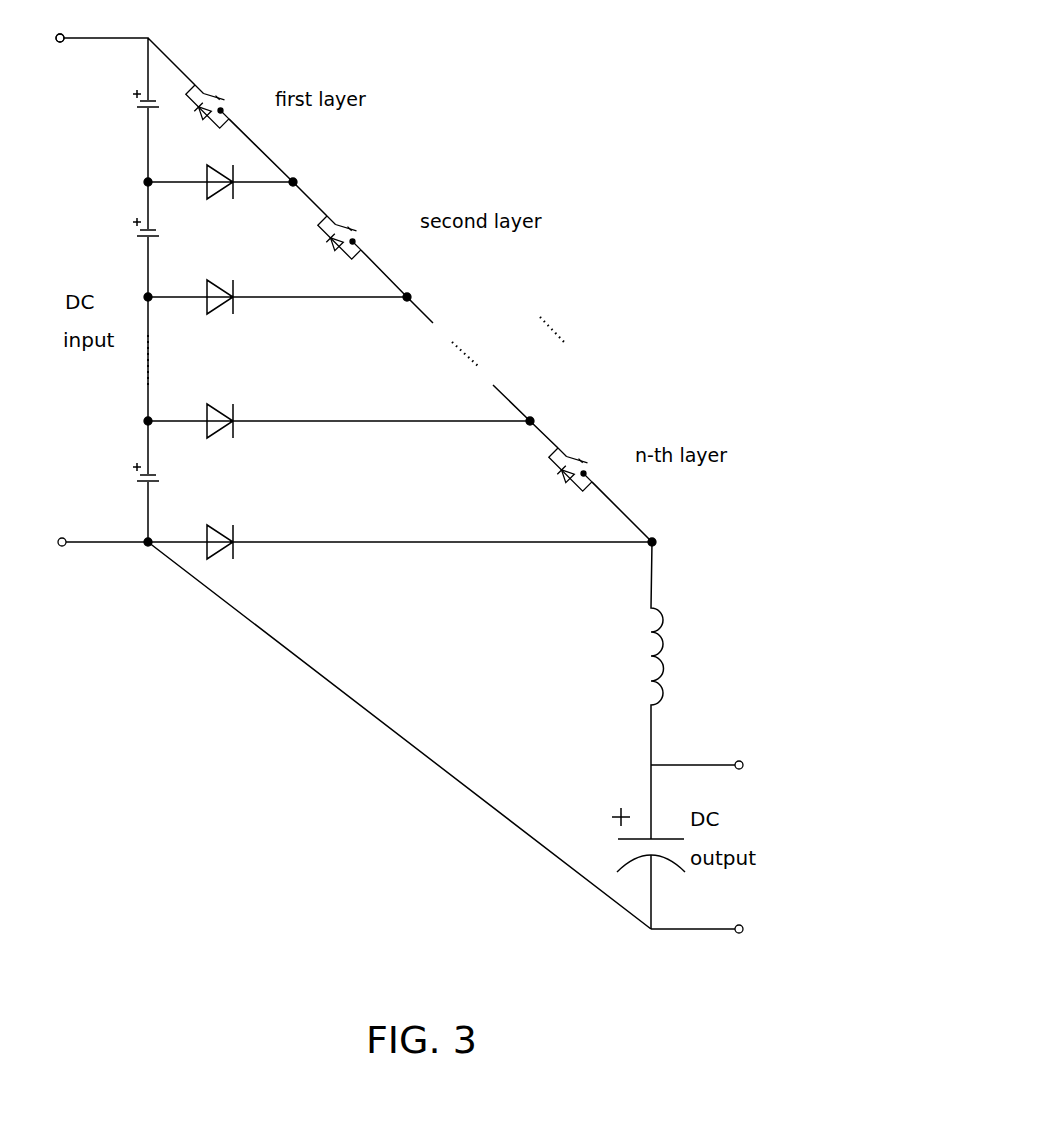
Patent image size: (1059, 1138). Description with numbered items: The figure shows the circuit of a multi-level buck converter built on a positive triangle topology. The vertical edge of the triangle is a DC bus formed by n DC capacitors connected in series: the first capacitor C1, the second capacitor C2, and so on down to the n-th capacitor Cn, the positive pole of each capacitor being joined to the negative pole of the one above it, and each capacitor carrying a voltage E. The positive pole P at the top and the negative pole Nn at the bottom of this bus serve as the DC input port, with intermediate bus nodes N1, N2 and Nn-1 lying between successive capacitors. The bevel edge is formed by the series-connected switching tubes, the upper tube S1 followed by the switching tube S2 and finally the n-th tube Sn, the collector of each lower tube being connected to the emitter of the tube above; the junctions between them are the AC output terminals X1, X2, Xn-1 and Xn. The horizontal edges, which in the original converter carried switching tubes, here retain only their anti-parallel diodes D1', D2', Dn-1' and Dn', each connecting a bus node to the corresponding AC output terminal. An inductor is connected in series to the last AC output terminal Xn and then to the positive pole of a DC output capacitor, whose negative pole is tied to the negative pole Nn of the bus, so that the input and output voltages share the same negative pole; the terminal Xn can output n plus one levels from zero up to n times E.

The positive pole of the DC bus P is at (99, 29).
The first capacitor C1 is at (128, 103).
The second capacitor C2 is at (128, 231).
The n-th DC capacitor Cn is at (128, 476).
The capacitor voltage E is at (177, 291).
The first bus node N1 is at (135, 183).
The second bus node N2 is at (135, 298).
The (n-1)-th bus node Nn-1 is at (130, 421).
The negative pole of the DC bus Nn is at (136, 556).
The first AC output terminal X1 is at (306, 182).
The second AC output terminal X2 is at (420, 296).
The (n-1)-th AC output terminal Xn-1 is at (549, 421).
The n-th AC output terminal Xn is at (664, 533).
The anti-parallel diode D1' is at (220, 189).
The anti-parallel diode D2' is at (277, 304).
The anti-parallel diode Dn-1' is at (339, 428).
The anti-parallel diode Dn' is at (400, 533).
The upper tube S1 is at (221, 106).
The switching tube S2 is at (352, 237).
The n-th switching tube Sn is at (583, 468).